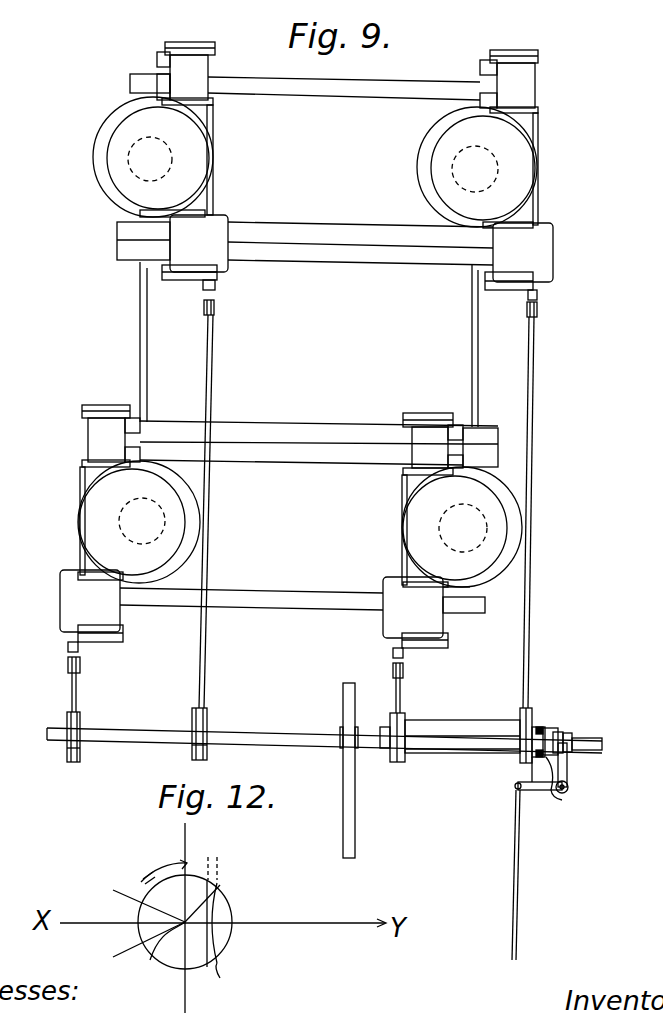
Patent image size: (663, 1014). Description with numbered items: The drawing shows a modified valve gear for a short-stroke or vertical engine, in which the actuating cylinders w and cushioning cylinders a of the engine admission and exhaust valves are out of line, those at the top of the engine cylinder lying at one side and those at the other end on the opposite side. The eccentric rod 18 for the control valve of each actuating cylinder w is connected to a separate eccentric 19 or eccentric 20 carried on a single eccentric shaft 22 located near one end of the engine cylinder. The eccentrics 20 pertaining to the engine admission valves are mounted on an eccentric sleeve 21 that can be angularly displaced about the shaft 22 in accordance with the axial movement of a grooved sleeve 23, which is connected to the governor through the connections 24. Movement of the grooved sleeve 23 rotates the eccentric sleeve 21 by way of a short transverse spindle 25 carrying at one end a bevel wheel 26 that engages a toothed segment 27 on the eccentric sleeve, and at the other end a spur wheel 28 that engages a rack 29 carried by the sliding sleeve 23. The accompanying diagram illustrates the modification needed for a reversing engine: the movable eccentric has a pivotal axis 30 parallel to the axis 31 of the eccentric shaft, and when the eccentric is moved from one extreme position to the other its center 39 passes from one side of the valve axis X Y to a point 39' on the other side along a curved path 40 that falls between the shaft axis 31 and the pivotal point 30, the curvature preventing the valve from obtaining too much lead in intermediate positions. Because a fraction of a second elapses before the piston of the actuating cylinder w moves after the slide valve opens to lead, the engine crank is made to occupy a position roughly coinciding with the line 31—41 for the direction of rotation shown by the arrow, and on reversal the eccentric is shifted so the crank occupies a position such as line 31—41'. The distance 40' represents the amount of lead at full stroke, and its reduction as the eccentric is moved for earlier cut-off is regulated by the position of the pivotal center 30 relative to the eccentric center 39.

In FIG. 9, the cushioning cylinder a is at (310, 258).
In FIG. 9, the actuating cylinder w is at (306, 446).
In FIG. 9, the eccentric rod 18 is at (207, 545).
In FIG. 9, the eccentric 19 is at (80, 757).
In FIG. 9, the eccentric 20 is at (399, 763).
In FIG. 9, the eccentric sleeve 21 is at (479, 730).
In FIG. 9, the eccentric shaft 22 is at (288, 742).
In FIG. 9, the grooved sleeve 23 is at (557, 735).
In FIG. 9, the governor connections 24 is at (567, 773).
In FIG. 9, the transverse spindle 25 is at (534, 766).
In FIG. 9, the bevel wheel 26 is at (567, 790).
In FIG. 9, the toothed segment 27 is at (516, 786).
In FIG. 9, the spur wheel 28 is at (539, 727).
In FIG. 9, the rack 29 is at (548, 728).
In FIG. 12, the pivotal axis 30 is at (383, 926).
In FIG. 12, the axis of the eccentric shaft 31 is at (182, 935).
In FIG. 12, the center of the eccentric 39 is at (237, 915).
In FIG. 12, the shifted center of the eccentric 39' is at (209, 985).
In FIG. 12, the curved path 40 is at (244, 923).
In FIG. 12, the lead at full stroke 40' is at (224, 853).
In FIG. 12, the crank line point 41 is at (152, 930).
In FIG. 12, the reversed crank line point 41' is at (140, 891).